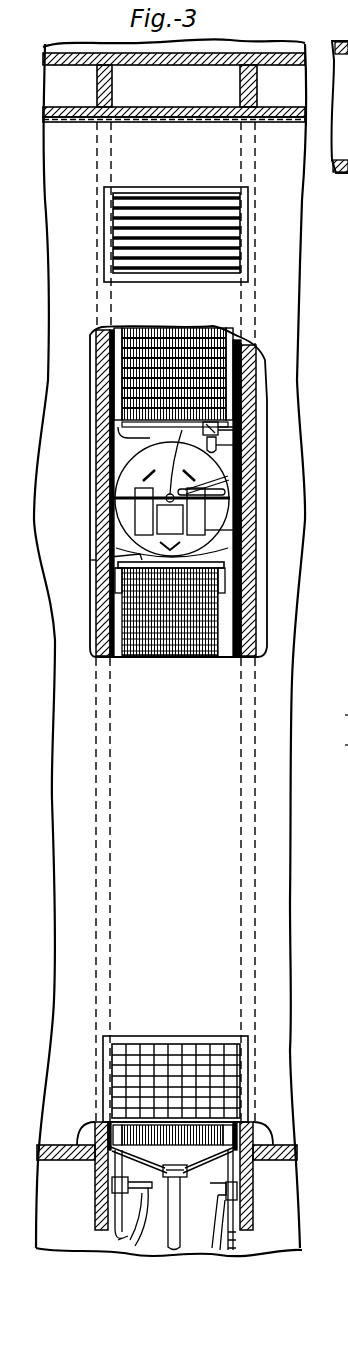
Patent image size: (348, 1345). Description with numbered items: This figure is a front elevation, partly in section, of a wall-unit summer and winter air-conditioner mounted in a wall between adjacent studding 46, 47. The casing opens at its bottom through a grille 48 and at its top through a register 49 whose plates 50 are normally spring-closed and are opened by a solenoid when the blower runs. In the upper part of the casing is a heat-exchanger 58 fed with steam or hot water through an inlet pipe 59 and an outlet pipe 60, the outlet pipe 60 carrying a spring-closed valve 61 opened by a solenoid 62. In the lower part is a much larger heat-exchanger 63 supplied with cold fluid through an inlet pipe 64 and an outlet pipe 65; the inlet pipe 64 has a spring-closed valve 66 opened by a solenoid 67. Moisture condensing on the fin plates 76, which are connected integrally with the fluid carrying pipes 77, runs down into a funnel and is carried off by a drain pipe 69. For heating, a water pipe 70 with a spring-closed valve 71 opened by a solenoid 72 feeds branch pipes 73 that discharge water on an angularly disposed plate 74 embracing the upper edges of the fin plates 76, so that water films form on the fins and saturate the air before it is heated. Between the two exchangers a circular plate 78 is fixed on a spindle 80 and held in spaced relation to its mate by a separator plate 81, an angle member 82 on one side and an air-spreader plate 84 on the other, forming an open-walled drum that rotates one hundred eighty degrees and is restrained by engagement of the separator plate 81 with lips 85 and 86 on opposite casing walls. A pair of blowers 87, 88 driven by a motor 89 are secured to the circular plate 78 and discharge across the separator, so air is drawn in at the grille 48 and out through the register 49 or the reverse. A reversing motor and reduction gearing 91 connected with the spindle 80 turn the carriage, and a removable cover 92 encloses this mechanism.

The studding 46 is at (258, 367).
The studding 47 is at (100, 371).
The grille 48 is at (232, 1078).
The register 49 is at (240, 229).
The plates 50 is at (118, 240).
The heat-exchanger 58 is at (226, 360).
The inlet pipe 59 is at (222, 428).
The outlet pipe 60 is at (220, 446).
The spring-closed valve 61 is at (240, 414).
The solenoid 62 is at (247, 418).
The heat-exchanger 63 is at (225, 612).
The inlet pipe 64 is at (115, 1166).
The outlet pipe 65 is at (236, 1246).
The spring-closed valve 66 is at (112, 1184).
The solenoid 67 is at (148, 1202).
The drain pipe 69 is at (180, 1193).
The water pipe 70 is at (256, 576).
The spring-closed valve 71 is at (255, 1186).
The solenoid 72 is at (214, 1197).
The branch pipes 73 is at (118, 438).
The angularly disposed plate 74 is at (98, 567).
The fin plates 76 is at (140, 632).
The fluid carrying pipes 77 is at (163, 656).
The circular plate 78 is at (137, 525).
The spindle 80 is at (178, 454).
The separator plate 81 is at (113, 489).
The angle member 82 is at (233, 552).
The air-spreader plate 84 is at (145, 473).
The lip 85 is at (233, 481).
The lip 86 is at (116, 505).
The blower 87 is at (233, 530).
The blower 88 is at (160, 545).
The motor 89 is at (116, 556).
The reduction gearing 91 is at (346, 744).
The removable cover 92 is at (346, 717).